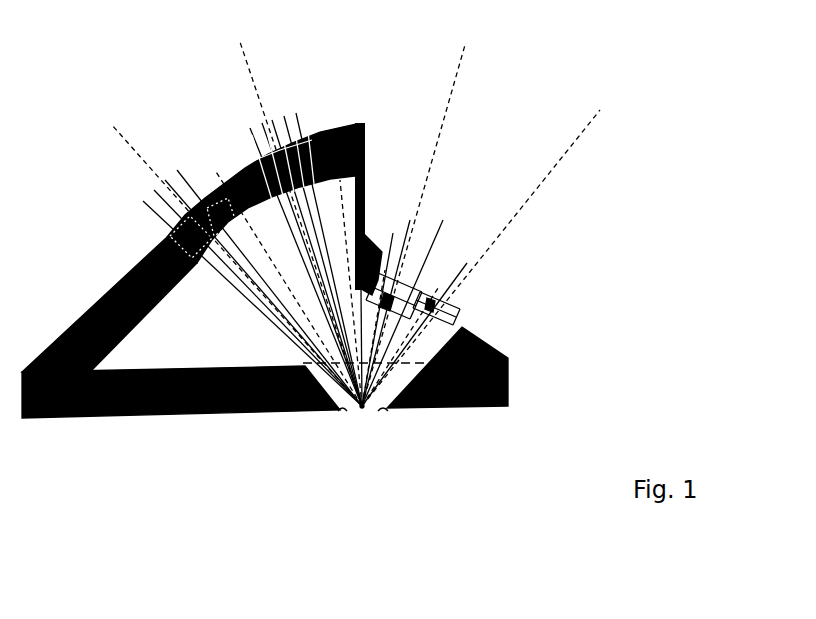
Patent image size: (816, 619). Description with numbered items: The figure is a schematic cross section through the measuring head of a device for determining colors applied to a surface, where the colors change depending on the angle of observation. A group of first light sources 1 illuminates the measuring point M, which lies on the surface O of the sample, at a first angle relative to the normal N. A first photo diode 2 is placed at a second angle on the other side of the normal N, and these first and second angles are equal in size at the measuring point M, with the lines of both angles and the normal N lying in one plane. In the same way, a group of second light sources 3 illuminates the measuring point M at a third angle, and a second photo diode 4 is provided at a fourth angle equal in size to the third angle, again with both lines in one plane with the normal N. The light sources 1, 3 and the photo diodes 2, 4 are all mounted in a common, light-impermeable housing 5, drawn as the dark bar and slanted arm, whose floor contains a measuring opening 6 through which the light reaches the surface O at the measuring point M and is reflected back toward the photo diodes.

The group of first light sources 1 is at (279, 135).
The first photo diode 2 is at (425, 247).
The group of second light sources 3 is at (155, 200).
The second photo diode 4 is at (468, 298).
The housing 5 is at (140, 414).
The measuring opening 6 is at (383, 411).
The surface O is at (345, 411).
The measuring point M is at (363, 412).
The normal N is at (357, 118).